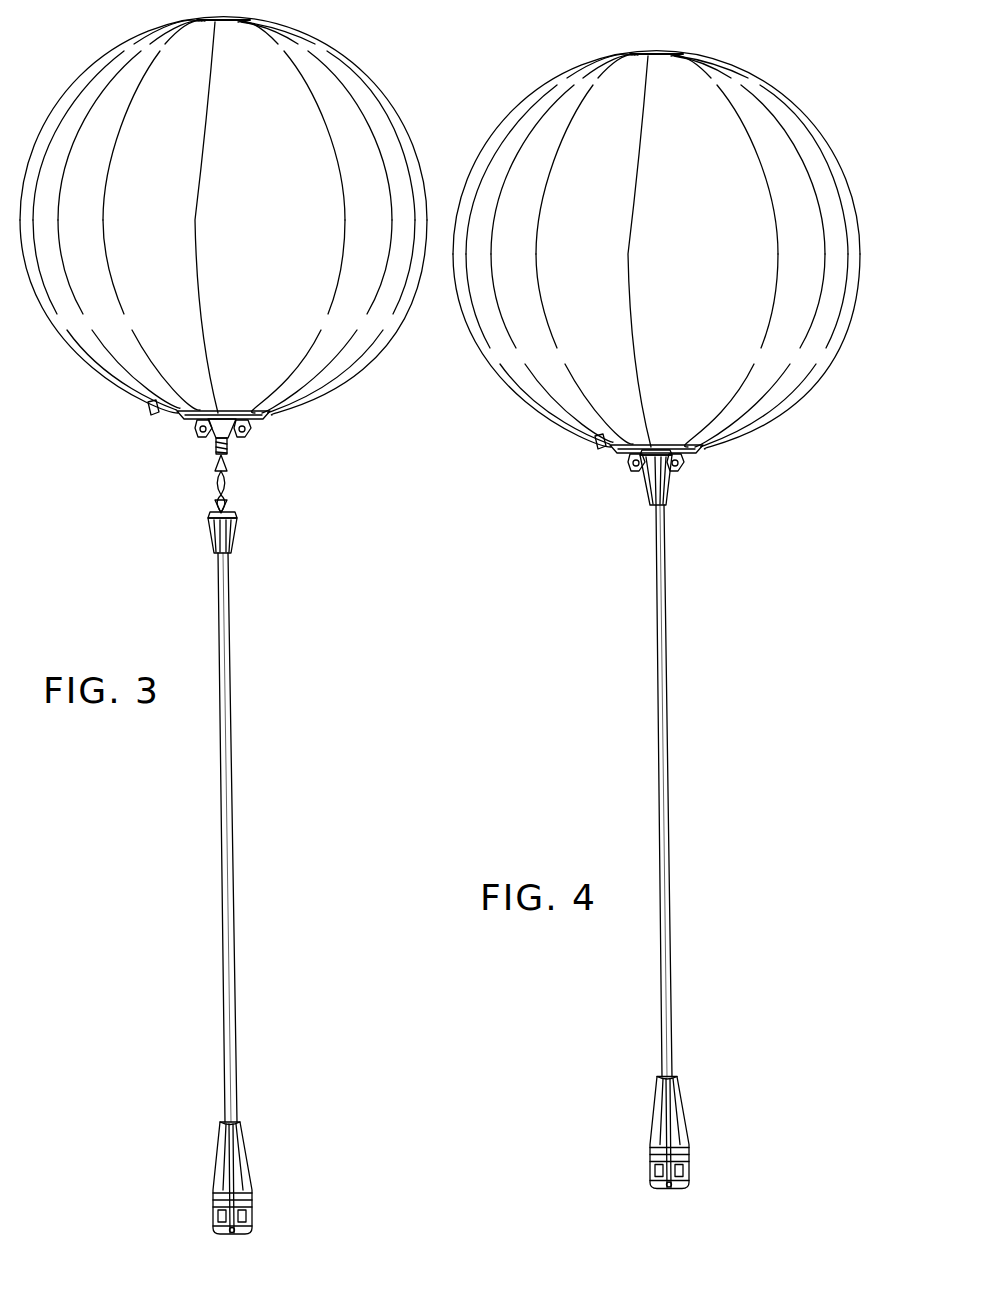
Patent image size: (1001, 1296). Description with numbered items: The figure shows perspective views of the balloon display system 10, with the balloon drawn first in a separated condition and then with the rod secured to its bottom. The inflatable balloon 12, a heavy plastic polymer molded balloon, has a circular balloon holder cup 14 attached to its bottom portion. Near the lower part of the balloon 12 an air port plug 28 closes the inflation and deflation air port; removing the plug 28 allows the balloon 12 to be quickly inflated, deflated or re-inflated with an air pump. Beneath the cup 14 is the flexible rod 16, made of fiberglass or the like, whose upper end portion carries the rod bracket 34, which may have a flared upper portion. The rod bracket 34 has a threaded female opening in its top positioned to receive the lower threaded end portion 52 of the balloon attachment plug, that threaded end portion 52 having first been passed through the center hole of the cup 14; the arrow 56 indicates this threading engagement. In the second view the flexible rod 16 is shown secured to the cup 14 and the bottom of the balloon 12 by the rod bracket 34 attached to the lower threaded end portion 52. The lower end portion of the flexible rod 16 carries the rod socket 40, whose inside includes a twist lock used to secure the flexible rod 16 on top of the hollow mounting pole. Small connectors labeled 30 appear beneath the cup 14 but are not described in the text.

In FIG. 3, the balloon display system 10 is at (395, 68).
In FIG. 4, the balloon display system 10 is at (575, 55).
In FIG. 3, the inflatable balloon 12 is at (348, 160).
In FIG. 4, the inflatable balloon 12 is at (698, 112).
In FIG. 3, the balloon holder cup 14 is at (240, 412).
In FIG. 4, the balloon holder cup 14 is at (703, 432).
In FIG. 3, the flexible rod 16 is at (230, 788).
In FIG. 4, the flexible rod 16 is at (665, 660).
In FIG. 3, the air port plug 28 is at (147, 410).
In FIG. 4, the air port plug 28 is at (598, 446).
In FIG. 3, the connectors 30 is at (192, 428).
In FIG. 4, the connectors 30 is at (630, 461).
In FIG. 3, the rod bracket 34 is at (223, 530).
In FIG. 4, the rod bracket 34 is at (672, 482).
In FIG. 3, the rod socket 40 is at (249, 1170).
In FIG. 4, the rod socket 40 is at (683, 1118).
In FIG. 3, the lower threaded end portion 52 is at (214, 446).
In FIG. 4, the lower threaded end portion 52 is at (545, 553).
In FIG. 3, the arrow 56 is at (216, 488).
In FIG. 4, the arrow 56 is at (567, 593).